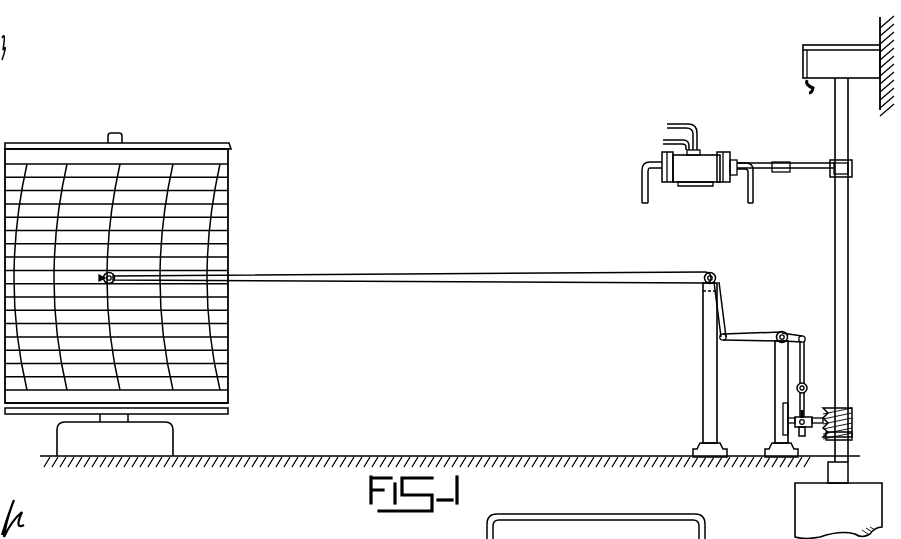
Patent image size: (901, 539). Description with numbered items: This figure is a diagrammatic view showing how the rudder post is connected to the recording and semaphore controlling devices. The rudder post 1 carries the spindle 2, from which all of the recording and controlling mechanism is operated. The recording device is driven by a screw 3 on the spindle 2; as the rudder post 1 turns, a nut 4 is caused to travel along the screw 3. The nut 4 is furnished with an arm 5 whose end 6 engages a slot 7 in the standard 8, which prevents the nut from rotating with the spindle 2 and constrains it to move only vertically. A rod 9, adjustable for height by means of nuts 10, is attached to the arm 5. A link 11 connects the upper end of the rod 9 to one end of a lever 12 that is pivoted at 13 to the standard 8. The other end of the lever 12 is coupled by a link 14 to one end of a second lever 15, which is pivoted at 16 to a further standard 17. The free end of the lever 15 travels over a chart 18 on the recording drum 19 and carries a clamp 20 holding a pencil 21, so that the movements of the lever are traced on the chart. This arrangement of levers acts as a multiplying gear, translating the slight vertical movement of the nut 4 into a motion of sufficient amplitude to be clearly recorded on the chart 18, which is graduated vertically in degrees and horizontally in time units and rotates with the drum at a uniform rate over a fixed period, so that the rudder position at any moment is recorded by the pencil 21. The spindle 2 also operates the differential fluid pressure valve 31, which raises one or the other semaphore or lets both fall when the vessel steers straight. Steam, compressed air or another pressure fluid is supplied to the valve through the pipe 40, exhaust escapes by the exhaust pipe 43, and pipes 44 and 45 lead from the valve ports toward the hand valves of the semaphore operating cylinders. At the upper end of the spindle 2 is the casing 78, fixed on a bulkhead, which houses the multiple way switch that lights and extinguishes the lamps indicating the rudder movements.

The rudder post 1 is at (838, 511).
The spindle 2 is at (843, 352).
The screw 3 is at (846, 412).
The nut 4 is at (850, 429).
The arm 5 is at (805, 408).
The end 6 is at (794, 421).
The slot 7 is at (785, 431).
The standard 8 is at (775, 381).
The rod 9 is at (810, 405).
The nuts 10 is at (803, 432).
The link 11 is at (803, 362).
The lever 12 is at (752, 335).
The pivot 13 is at (792, 325).
The link 14 is at (726, 312).
The lever 15 is at (612, 283).
The pivot 16 is at (716, 278).
The standard 17 is at (707, 329).
The chart 18 is at (218, 238).
The recording drum 19 is at (229, 147).
The clamp 20 is at (106, 283).
The pencil 21 is at (112, 273).
The differential fluid pressure valve 31 is at (748, 168).
The pipe 40 is at (753, 199).
The exhaust pipe 43 is at (642, 200).
The pipe 44 is at (667, 126).
The pipe 45 is at (663, 143).
The casing 78 is at (848, 66).